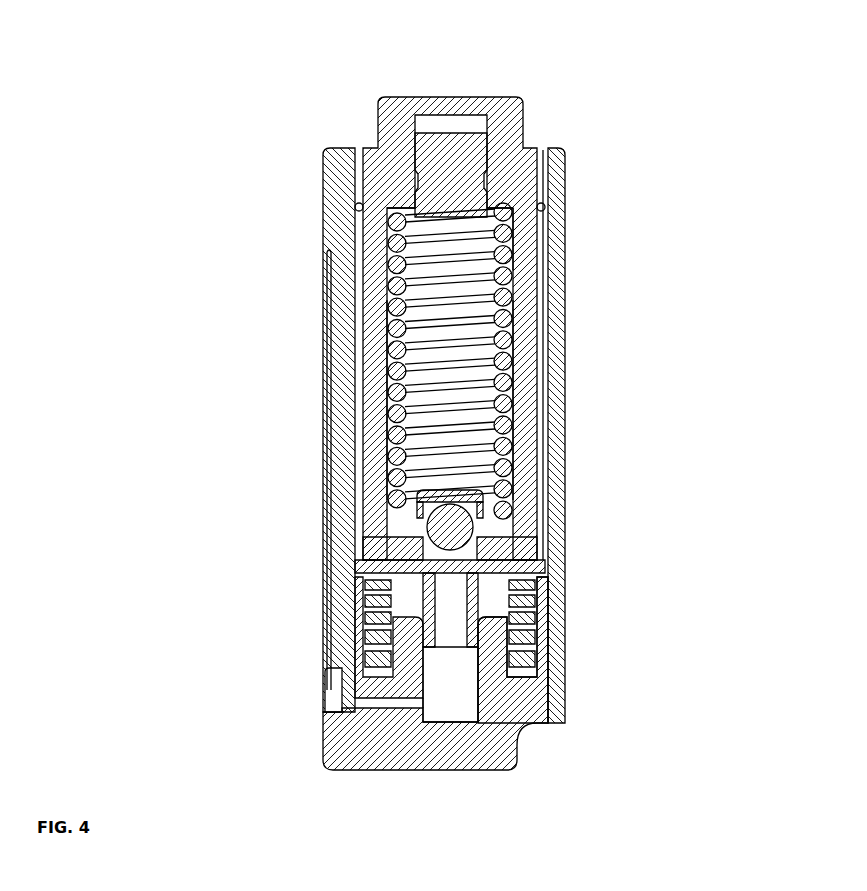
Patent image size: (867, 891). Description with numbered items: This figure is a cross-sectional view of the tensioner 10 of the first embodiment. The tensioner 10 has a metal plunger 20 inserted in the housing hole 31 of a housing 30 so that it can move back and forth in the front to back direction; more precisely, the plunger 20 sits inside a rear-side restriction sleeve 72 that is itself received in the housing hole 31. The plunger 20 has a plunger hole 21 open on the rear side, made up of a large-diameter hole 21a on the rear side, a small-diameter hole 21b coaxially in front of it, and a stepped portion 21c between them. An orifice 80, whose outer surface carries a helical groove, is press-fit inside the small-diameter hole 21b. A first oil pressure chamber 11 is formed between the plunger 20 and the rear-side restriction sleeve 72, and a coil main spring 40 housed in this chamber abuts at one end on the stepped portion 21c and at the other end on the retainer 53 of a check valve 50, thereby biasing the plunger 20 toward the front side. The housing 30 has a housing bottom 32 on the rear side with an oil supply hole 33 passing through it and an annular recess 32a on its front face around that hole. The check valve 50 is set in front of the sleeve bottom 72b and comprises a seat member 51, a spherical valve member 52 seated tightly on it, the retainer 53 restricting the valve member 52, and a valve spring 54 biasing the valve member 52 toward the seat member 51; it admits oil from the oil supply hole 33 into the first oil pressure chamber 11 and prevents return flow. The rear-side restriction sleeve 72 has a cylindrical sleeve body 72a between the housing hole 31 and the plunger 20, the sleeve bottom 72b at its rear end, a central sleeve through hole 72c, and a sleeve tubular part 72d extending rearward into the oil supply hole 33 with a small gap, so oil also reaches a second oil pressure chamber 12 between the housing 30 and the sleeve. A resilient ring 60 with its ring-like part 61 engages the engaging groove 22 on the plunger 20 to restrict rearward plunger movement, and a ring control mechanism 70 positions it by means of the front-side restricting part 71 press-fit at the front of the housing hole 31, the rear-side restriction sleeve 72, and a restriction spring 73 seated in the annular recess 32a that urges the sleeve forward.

The tensioner 10 is at (202, 100).
The first oil pressure chamber 11 is at (460, 363).
The second oil pressure chamber 12 is at (392, 629).
The plunger 20 is at (515, 297).
The plunger hole 21 is at (527, 237).
The large-diameter hole 21a is at (512, 256).
The small-diameter hole 21b is at (487, 175).
The stepped portion 21c is at (520, 205).
The engaging groove 22 is at (363, 257).
The housing 30 is at (565, 163).
The housing hole 31 is at (550, 402).
The housing bottom 32 is at (485, 699).
The annular recess 32a is at (537, 657).
The oil supply hole 33 is at (453, 685).
The main spring 40 is at (505, 318).
The check valve 50 is at (377, 528).
The seat member 51 is at (410, 550).
The valve member 52 is at (397, 530).
The retainer 53 is at (417, 492).
The valve spring 54 is at (430, 512).
The resilient ring 60 is at (392, 160).
The ring-like part 61 is at (358, 204).
The ring control mechanism 70 is at (416, 394).
The front-side restricting part 71 is at (548, 165).
The rear-side restriction sleeve 72 is at (537, 606).
The sleeve body 72a is at (533, 545).
The sleeve bottom 72b is at (537, 582).
The sleeve through hole 72c is at (537, 602).
The sleeve tubular part 72d is at (506, 644).
The restriction spring 73 is at (327, 672).
The orifice 80 is at (440, 150).